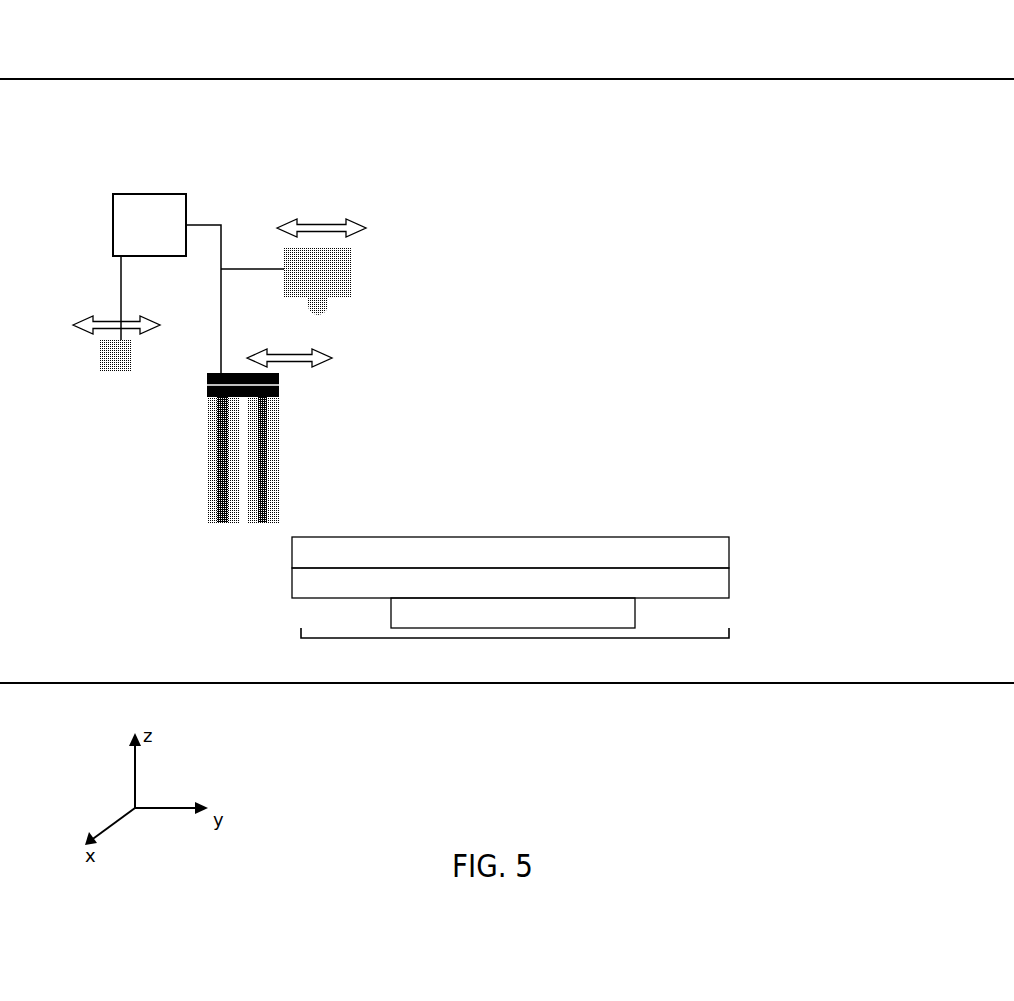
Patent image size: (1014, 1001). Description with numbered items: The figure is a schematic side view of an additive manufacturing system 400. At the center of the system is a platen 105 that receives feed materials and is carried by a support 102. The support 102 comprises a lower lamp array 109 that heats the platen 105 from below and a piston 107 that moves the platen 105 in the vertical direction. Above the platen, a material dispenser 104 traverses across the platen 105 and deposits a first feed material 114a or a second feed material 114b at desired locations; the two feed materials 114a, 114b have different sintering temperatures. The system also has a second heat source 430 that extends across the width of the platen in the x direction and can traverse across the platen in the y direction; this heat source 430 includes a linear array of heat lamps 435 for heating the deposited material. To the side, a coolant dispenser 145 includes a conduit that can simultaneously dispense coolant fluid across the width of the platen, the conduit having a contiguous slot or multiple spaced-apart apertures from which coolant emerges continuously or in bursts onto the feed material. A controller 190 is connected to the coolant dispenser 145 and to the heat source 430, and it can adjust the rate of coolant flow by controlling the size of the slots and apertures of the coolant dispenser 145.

The additive manufacturing system 400 is at (832, 93).
The controller 190 is at (149, 225).
The coolant dispenser 145 is at (110, 360).
The second heat source 430 is at (352, 269).
The heat lamps 435 is at (322, 312).
The material dispenser 104 is at (235, 373).
The first feed material 114a is at (222, 490).
The second feed material 114b is at (265, 448).
The platen 105 is at (510, 552).
The lower lamp array 109 is at (510, 583).
The piston 107 is at (513, 613).
The support 102 is at (515, 655).